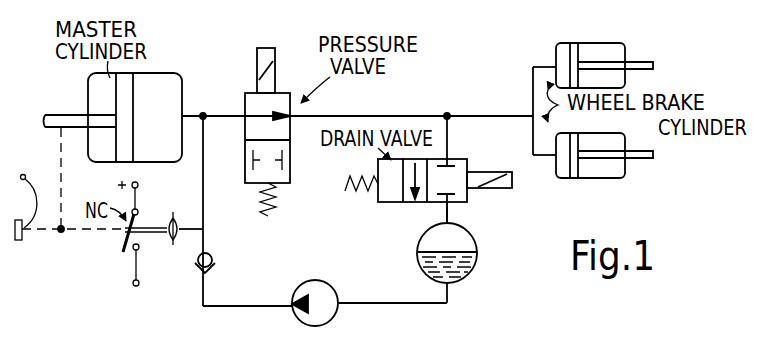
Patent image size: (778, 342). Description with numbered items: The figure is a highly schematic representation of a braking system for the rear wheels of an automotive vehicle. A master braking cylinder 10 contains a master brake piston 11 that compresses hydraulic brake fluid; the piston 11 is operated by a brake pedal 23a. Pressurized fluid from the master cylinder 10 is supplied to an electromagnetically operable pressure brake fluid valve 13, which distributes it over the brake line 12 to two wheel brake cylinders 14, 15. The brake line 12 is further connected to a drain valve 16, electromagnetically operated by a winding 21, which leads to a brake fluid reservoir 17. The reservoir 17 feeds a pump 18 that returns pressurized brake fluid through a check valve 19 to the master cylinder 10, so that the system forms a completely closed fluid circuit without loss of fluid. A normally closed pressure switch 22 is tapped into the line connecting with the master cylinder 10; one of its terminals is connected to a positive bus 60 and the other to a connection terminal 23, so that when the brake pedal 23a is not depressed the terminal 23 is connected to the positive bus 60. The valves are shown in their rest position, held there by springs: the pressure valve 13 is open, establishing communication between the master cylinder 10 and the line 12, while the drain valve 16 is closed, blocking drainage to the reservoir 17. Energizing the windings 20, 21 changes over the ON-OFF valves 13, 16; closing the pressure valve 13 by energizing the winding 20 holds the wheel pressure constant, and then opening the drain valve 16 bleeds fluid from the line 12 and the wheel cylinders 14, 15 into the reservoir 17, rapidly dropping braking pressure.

The master braking cylinder 10 is at (146, 80).
The master brake piston 11 is at (118, 147).
The brake line 12 is at (344, 116).
The pressure brake fluid valve 13 is at (296, 100).
The wheel brake cylinder 14 is at (617, 52).
The wheel brake cylinder 15 is at (618, 131).
The drain valve 16 is at (458, 162).
The brake fluid reservoir 17 is at (477, 262).
The pump 18 is at (323, 290).
The check valve 19 is at (212, 262).
The electromagnet winding 20 is at (257, 60).
The winding 21 is at (511, 189).
The pressure switch 22 is at (155, 235).
The connection terminal 23 is at (133, 283).
The brake pedal 23a is at (20, 240).
The positive bus 60 is at (138, 185).